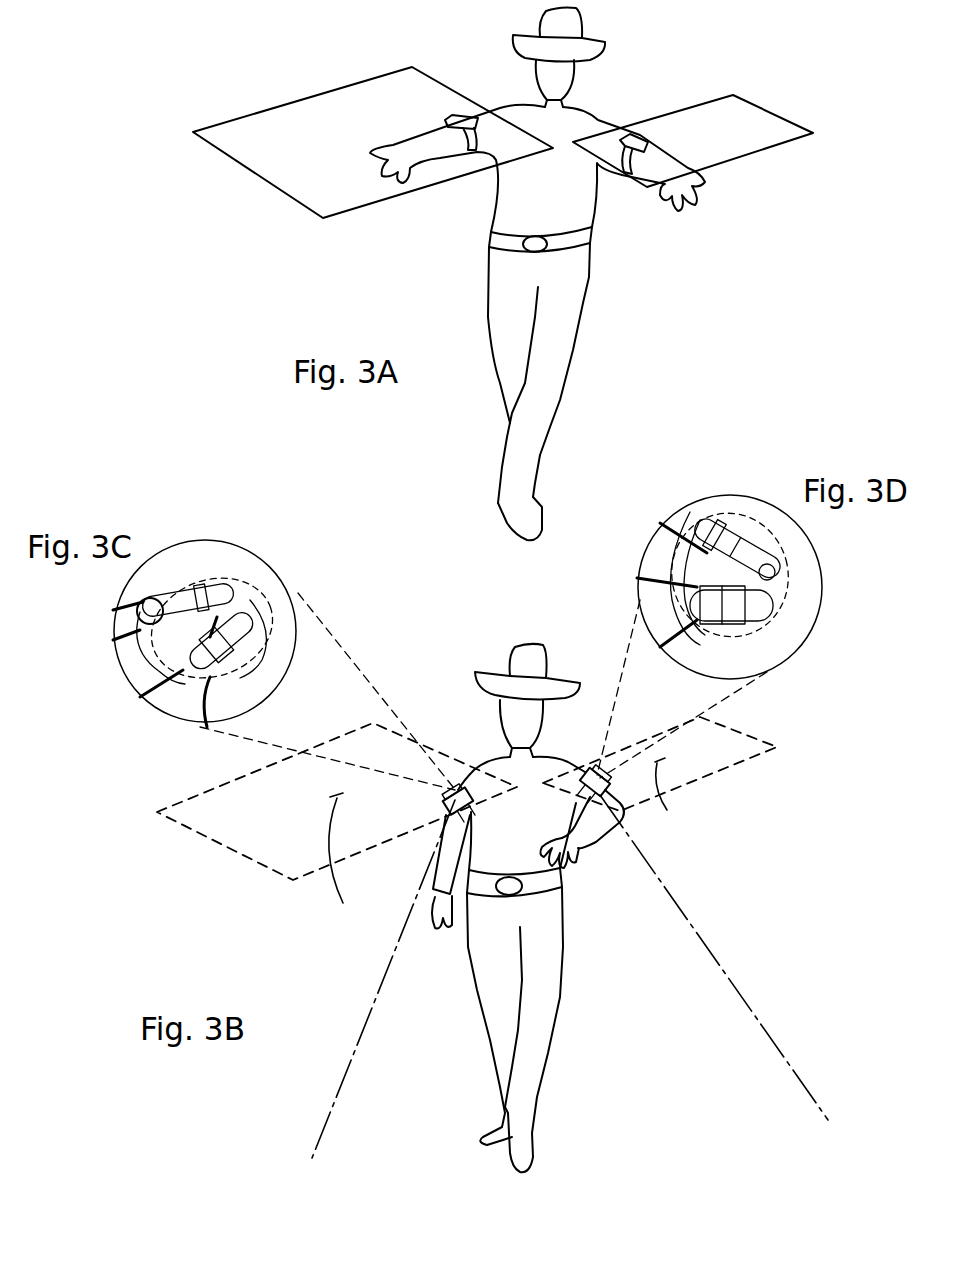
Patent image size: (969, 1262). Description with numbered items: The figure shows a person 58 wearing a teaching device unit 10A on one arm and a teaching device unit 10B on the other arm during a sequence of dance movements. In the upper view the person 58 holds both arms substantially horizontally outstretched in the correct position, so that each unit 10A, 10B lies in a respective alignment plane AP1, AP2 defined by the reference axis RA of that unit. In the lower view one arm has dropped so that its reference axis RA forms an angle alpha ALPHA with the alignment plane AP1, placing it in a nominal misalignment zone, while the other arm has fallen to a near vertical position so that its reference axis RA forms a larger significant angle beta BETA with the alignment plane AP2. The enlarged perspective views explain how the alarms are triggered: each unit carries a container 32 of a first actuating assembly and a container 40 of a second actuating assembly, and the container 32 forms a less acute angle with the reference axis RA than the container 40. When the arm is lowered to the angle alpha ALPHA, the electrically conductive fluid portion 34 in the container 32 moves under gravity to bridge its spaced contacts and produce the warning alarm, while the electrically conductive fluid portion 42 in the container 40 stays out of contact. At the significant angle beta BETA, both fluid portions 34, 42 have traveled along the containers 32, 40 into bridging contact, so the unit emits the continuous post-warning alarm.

In FIG. 3A, the teaching device unit 10A is at (455, 116).
In FIG. 3B, the teaching device unit 10A is at (456, 793).
In FIG. 3A, the teaching device unit 10B is at (643, 133).
In FIG. 3B, the teaching device unit 10B is at (595, 773).
In FIG. 3A, the person 58 is at (586, 303).
In FIG. 3B, the person 58 is at (570, 895).
In FIG. 3C, the container 32 is at (260, 597).
In FIG. 3D, the container 32 is at (773, 607).
In FIG. 3C, the electrically conductive fluid portion 34 is at (240, 648).
In FIG. 3D, the electrically conductive fluid portion 34 is at (730, 620).
In FIG. 3C, the container 40 is at (220, 587).
In FIG. 3D, the container 40 is at (737, 547).
In FIG. 3C, the electrically conductive fluid portion 42 is at (182, 590).
In FIG. 3A, the alignment plane AP1 is at (728, 143).
In FIG. 3B, the alignment plane AP1 is at (733, 756).
In FIG. 3A, the alignment plane AP2 is at (353, 192).
In FIG. 3B, the alignment plane AP2 is at (268, 848).
In FIG. 3B, the reference axis RA is at (367, 1033).
In FIG. 3B, the angle beta BETA is at (388, 977).
In FIG. 3B, the angle alpha ALPHA is at (686, 798).